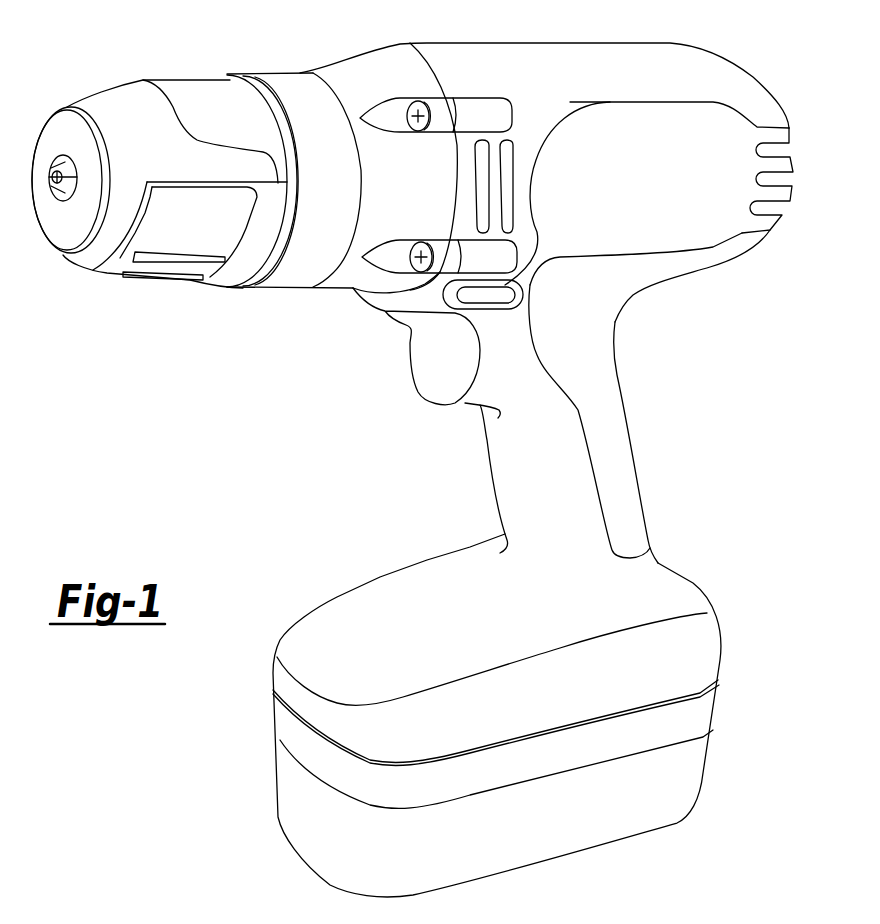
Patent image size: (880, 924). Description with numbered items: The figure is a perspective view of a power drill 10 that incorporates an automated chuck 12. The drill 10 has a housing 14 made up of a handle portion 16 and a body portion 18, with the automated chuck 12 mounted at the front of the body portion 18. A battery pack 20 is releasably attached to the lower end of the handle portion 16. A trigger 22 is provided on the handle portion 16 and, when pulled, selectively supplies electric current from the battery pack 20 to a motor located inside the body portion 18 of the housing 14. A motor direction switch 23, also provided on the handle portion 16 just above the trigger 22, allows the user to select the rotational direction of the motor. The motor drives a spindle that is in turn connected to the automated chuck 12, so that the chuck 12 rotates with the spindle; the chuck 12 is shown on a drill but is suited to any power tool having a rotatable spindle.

The power drill 10 is at (258, 394).
The automated chuck 12 is at (139, 63).
The housing 14 is at (764, 70).
The handle portion 16 is at (632, 447).
The body portion 18 is at (618, 43).
The battery pack 20 is at (708, 757).
The trigger 22 is at (420, 378).
The motor direction switch 23 is at (515, 300).